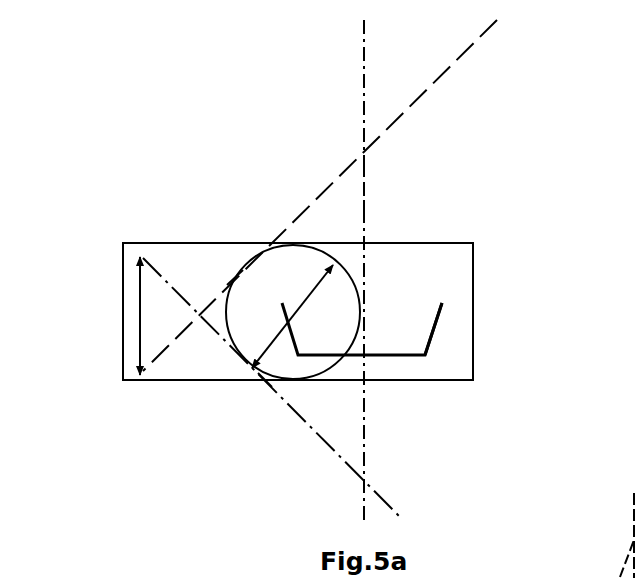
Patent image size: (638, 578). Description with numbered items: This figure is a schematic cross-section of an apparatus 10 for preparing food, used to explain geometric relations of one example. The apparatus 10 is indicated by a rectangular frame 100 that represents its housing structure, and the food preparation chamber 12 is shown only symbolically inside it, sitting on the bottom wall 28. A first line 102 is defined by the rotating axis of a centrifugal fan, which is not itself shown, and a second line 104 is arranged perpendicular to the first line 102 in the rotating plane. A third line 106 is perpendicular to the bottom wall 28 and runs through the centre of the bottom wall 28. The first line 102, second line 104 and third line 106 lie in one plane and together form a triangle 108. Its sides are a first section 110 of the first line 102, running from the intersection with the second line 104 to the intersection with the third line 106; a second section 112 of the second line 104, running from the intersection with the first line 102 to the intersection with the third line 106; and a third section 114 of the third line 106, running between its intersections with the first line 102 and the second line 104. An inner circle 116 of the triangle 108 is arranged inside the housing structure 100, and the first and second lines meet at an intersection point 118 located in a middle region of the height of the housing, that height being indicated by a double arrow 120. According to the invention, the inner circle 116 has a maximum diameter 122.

The apparatus 10 is at (447, 241).
The food preparation chamber 12 is at (437, 328).
The bottom wall 28 is at (383, 357).
The rectangular frame 100 is at (452, 379).
The first line 102 is at (299, 200).
The second line 104 is at (303, 431).
The third line 106 is at (371, 88).
The triangle 108 is at (371, 167).
The first section 110 is at (235, 278).
The second section 112 is at (277, 393).
The third section 114 is at (366, 208).
The inner circle 116 is at (273, 243).
The intersection point 118 is at (197, 316).
The double arrow 120 is at (138, 283).
The maximum diameter 122 is at (322, 286).